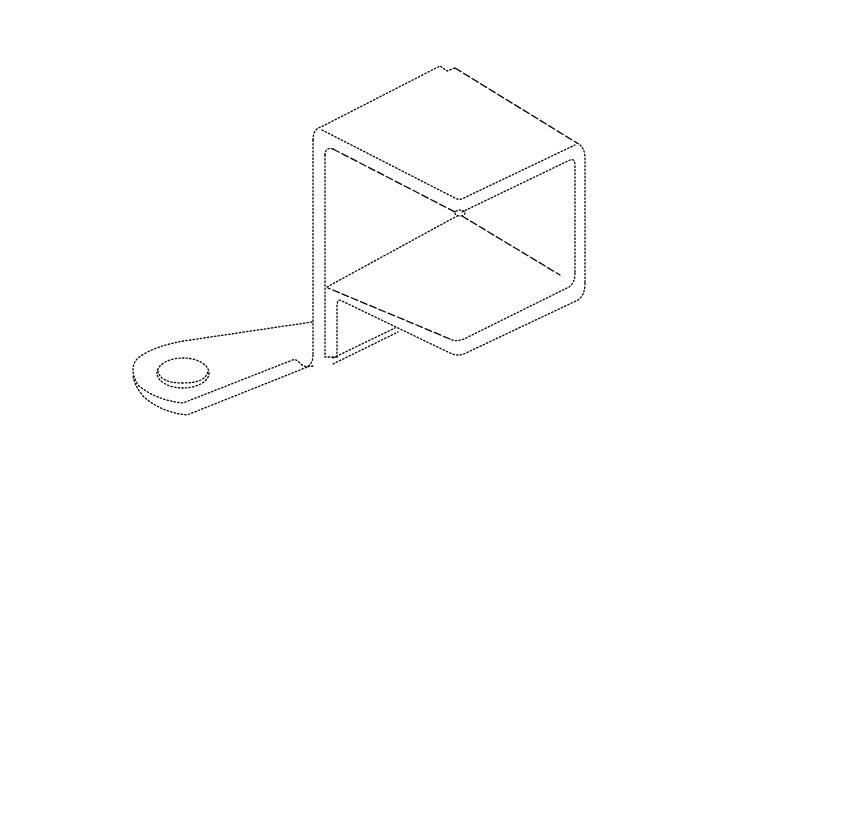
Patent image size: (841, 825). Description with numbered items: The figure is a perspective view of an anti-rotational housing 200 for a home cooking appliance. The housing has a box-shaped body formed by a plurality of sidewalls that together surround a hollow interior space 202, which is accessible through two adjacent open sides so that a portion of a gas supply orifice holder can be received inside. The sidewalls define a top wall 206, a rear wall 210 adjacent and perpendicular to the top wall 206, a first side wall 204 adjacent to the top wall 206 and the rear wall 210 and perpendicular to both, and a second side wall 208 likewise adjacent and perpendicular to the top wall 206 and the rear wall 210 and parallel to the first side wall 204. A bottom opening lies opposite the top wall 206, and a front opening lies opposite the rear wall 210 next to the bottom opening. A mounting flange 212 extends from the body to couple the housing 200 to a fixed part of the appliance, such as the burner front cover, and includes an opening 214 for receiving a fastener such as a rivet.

The anti-rotational housing 200 is at (668, 508).
The hollow interior space 202 is at (618, 237).
The first side wall 204 is at (430, 347).
The top wall 206 is at (590, 192).
The second side wall 208 is at (392, 105).
The rear wall 210 is at (310, 215).
The mounting flange 212 is at (135, 378).
The opening 214 is at (187, 358).